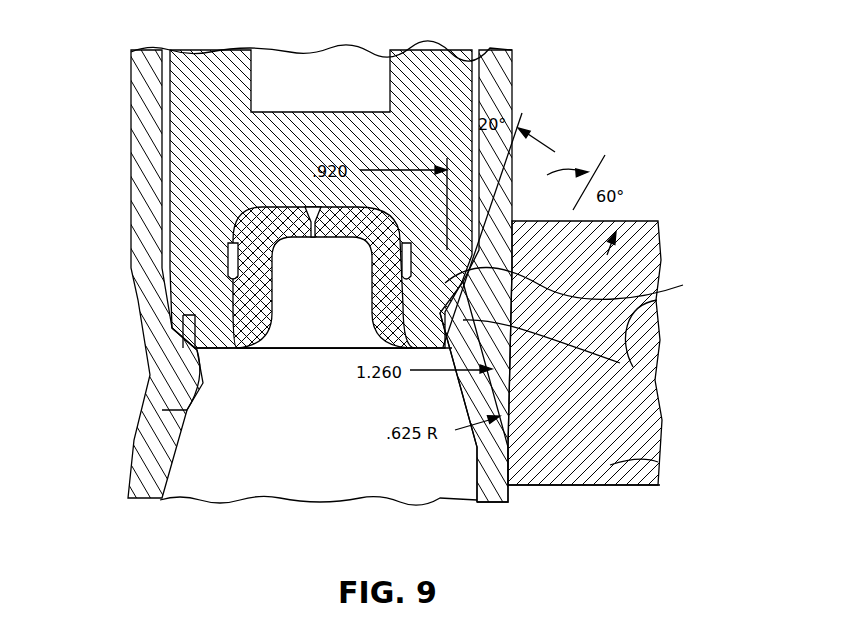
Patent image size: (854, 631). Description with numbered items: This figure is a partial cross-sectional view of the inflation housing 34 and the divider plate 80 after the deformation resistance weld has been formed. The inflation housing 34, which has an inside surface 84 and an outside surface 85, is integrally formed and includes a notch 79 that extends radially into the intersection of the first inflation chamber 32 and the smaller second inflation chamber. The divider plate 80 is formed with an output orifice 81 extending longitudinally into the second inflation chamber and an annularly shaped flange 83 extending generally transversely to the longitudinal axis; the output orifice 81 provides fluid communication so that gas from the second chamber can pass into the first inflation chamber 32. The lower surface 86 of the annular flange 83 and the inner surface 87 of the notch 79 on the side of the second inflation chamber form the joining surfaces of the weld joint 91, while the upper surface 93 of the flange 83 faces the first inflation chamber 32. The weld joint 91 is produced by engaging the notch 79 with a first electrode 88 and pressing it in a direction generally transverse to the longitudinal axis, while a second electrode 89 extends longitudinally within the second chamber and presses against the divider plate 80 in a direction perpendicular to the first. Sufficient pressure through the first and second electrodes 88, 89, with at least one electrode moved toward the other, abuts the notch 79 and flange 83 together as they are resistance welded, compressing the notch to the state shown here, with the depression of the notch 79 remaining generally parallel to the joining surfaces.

The first inflation chamber 32 is at (197, 480).
The inflation housing 34 is at (150, 132).
The notch 79 is at (163, 337).
The divider plate 80 is at (243, 237).
The output orifice 81 is at (312, 207).
The annular flange 83 is at (185, 288).
The inside surface 84 is at (612, 462).
The outside surface 85 is at (520, 487).
The lower surface 86 is at (455, 398).
The inner surface 87 is at (190, 408).
The first electrode 88 is at (617, 440).
The second electrode 89 is at (428, 87).
The deformation resistance weld joint 91 is at (633, 367).
The upper surface 93 is at (580, 283).